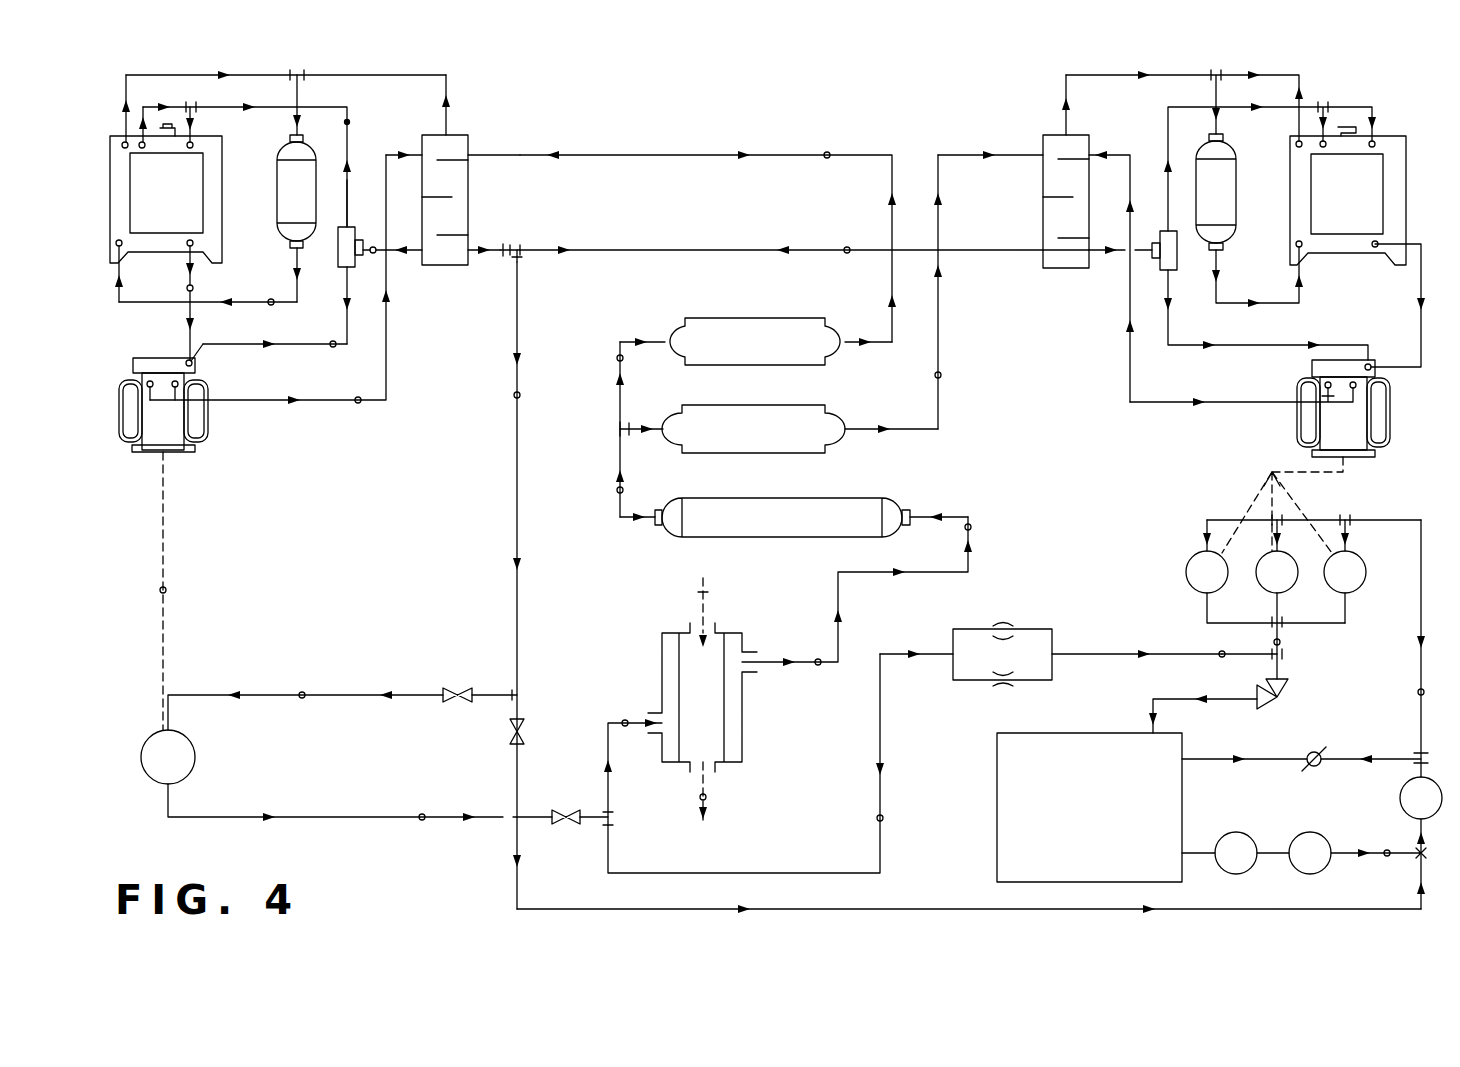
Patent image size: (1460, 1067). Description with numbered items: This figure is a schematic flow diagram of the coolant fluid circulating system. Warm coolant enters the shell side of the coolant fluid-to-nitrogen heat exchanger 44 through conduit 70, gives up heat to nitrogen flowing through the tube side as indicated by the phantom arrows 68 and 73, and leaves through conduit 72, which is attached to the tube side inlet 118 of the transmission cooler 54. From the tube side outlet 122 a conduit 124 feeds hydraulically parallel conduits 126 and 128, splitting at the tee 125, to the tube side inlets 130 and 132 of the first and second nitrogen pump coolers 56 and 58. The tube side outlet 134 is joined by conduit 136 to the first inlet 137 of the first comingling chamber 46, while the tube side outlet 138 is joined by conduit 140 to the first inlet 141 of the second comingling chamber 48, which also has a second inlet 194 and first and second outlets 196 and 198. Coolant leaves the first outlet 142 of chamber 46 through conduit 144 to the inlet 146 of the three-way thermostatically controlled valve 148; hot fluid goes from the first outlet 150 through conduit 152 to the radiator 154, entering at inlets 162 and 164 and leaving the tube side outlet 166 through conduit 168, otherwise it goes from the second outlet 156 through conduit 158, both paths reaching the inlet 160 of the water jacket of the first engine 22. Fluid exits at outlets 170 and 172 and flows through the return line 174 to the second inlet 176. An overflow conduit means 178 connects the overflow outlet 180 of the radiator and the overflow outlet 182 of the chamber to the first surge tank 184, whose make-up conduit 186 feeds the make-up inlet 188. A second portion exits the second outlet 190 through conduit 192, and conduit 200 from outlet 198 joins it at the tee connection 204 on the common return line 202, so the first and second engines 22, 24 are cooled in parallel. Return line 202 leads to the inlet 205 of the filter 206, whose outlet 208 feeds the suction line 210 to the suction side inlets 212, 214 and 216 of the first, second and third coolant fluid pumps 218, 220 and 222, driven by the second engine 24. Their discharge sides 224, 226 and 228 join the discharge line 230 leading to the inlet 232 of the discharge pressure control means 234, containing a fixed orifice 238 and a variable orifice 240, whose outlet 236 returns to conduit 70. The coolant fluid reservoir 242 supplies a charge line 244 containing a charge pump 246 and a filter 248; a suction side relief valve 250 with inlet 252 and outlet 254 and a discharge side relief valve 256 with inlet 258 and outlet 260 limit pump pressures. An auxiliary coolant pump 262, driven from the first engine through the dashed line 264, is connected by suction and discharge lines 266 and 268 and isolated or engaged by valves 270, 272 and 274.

The first engine 22 is at (172, 442).
The second engine 24 is at (1357, 447).
The coolant fluid heat exchanger 44 is at (698, 664).
The first comingling chamber 46 is at (457, 133).
The second comingling chamber 48 is at (1048, 133).
The transmission cooler 54 is at (807, 496).
The first nitrogen pump cooler 56 is at (792, 317).
The second nitrogen pump cooler 58 is at (782, 404).
The arrow 68 is at (708, 592).
The conduit 70 is at (623, 720).
The conduit 72 is at (972, 527).
The arrow 73 is at (708, 796).
The tube side inlet 118 is at (914, 514).
The tube side outlet 122 is at (651, 513).
The conduit 124 is at (616, 490).
The tee 125 is at (616, 428).
The conduit 126 is at (616, 358).
The conduit 128 is at (634, 434).
The tube side inlet 130 is at (664, 338).
The tube side inlet 132 is at (663, 423).
The tube side outlet 134 is at (847, 346).
The conduit 136 is at (826, 153).
The first inlet 137 is at (473, 153).
The tube side outlet 138 is at (850, 426).
The conduit 140 is at (942, 375).
The first inlet 141 is at (1028, 153).
The first outlet 142 is at (405, 255).
The conduit 144 is at (371, 255).
The inlet 146 is at (363, 240).
The three-way thermostatically controlled valve 148 is at (343, 255).
The first outlet 150 is at (349, 198).
The conduit 152 is at (350, 121).
The radiator 154 is at (152, 210).
The second outlet 156 is at (345, 295).
The conduit 158 is at (331, 348).
The inlet 160 is at (194, 362).
The inlet 162 is at (145, 148).
The inlet 164 is at (194, 143).
The tube side outlet 166 is at (194, 243).
The conduit 168 is at (186, 288).
The outlet 170 is at (145, 383).
The outlet 172 is at (180, 385).
The return line 174 is at (359, 404).
The second inlet 176 is at (402, 153).
The overflow conduit means 178 is at (238, 76).
The overflow outlet 180 is at (120, 147).
The overflow outlet 182 is at (444, 118).
The first surge tank 184 is at (277, 203).
The coolant fluid make-up conduit 186 is at (268, 300).
The make-up inlet 188 is at (114, 243).
The second outlet 190 is at (476, 255).
The conduit 192 is at (503, 245).
The second inlet 194 is at (1091, 152).
The first outlet 196 is at (1090, 247).
The second outlet 198 is at (1040, 254).
The conduit 200 is at (846, 248).
The common return line 202 is at (520, 394).
The tee connection 204 is at (521, 258).
The inlet 205 is at (1420, 821).
The filter 206 is at (1399, 798).
The outlet 208 is at (1416, 764).
The suction line 210 is at (1418, 693).
The suction side inlet 212 is at (1202, 550).
The suction side inlet 214 is at (1281, 553).
The suction side inlet 216 is at (1352, 553).
The first coolant fluid pump 218 is at (1186, 572).
The second coolant fluid pump 220 is at (1275, 594).
The third coolant fluid pump 222 is at (1367, 572).
The discharge side 224 is at (1205, 594).
The discharge side 226 is at (1281, 600).
The discharge side 228 is at (1352, 600).
The discharge line 230 is at (1220, 652).
The inlet 232 is at (1072, 652).
The discharge pressure control means 234 is at (1008, 662).
The outlet 236 is at (951, 662).
The fixed orifice 238 is at (1000, 684).
The variable orifice 240 is at (1003, 625).
The coolant fluid reservoir 242 is at (1073, 858).
The coolant fluid charge line 244 is at (1385, 850).
The coolant charge pump 246 is at (1313, 875).
The filter 248 is at (1237, 875).
The suction side relief valve 250 is at (1318, 750).
The inlet 252 is at (1329, 748).
The outlet 254 is at (1300, 762).
The discharge side relief valve 256 is at (1292, 683).
The inlet 258 is at (1284, 655).
The outlet 260 is at (1254, 696).
The auxiliary coolant pump 262 is at (197, 756).
The dashed line 264 is at (166, 589).
The suction line 266 is at (304, 693).
The discharge line 268 is at (420, 815).
The valve 270 is at (457, 686).
The valve 272 is at (526, 732).
The valve 274 is at (565, 808).